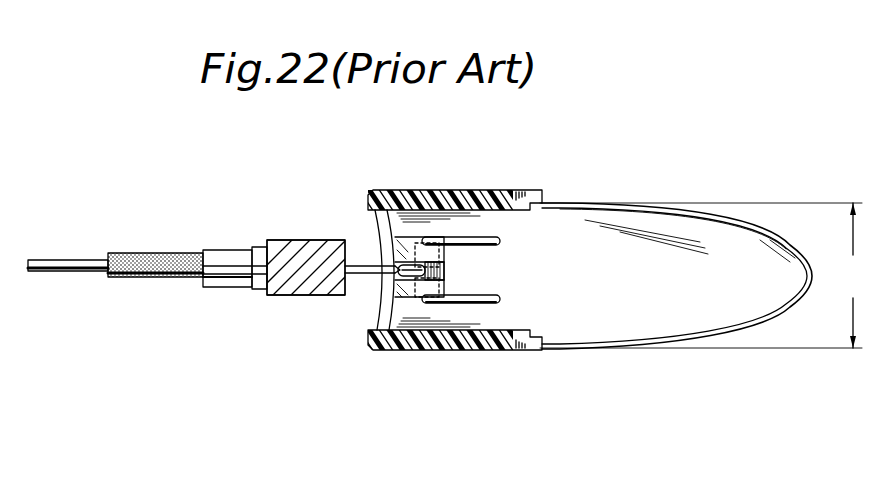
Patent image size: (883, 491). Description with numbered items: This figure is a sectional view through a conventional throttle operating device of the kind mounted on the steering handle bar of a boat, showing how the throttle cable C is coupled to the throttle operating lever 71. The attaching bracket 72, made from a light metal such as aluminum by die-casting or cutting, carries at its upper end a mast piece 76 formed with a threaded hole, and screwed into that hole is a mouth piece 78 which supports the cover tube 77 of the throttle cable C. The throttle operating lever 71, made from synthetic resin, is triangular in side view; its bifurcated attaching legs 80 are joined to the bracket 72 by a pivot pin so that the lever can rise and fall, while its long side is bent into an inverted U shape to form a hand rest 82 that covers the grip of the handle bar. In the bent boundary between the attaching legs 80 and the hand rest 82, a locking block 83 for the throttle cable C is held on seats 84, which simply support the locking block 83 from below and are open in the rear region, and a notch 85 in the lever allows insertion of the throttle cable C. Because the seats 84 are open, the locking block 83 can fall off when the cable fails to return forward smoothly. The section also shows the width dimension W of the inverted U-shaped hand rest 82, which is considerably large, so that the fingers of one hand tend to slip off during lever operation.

The throttle cable C is at (78, 272).
The cover tube 77 is at (150, 252).
The mouth piece 78 is at (234, 277).
The attaching bracket 72 is at (311, 298).
The mast piece 76 is at (287, 246).
The attaching legs 80 is at (438, 189).
The seats 84 is at (409, 245).
The locking block 83 is at (444, 273).
The notch 85 is at (397, 267).
The throttle operating lever 71 is at (565, 352).
The hand rest 82 is at (752, 280).
The width dimension W is at (705, 275).